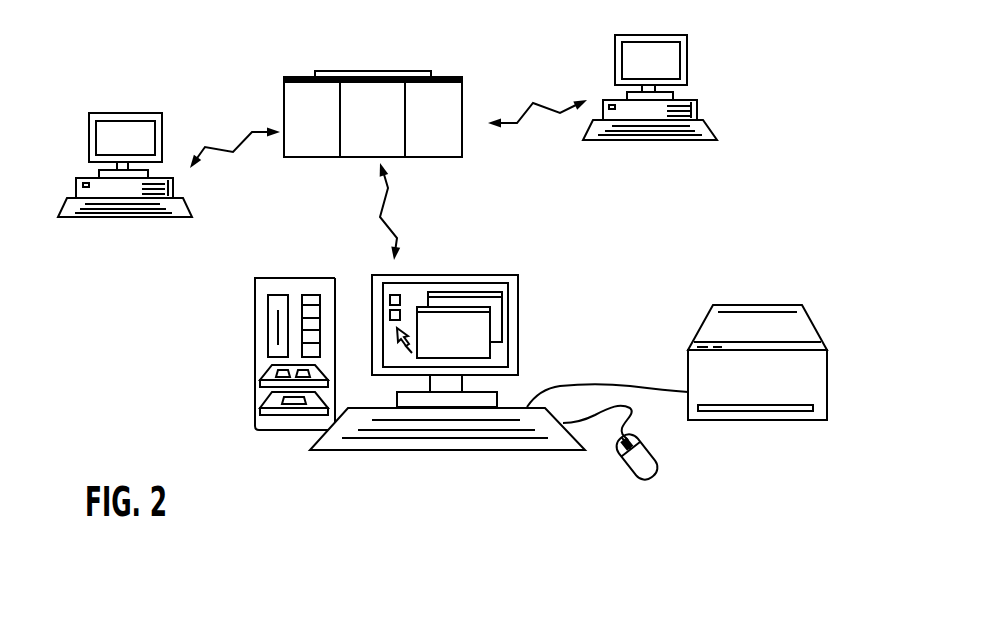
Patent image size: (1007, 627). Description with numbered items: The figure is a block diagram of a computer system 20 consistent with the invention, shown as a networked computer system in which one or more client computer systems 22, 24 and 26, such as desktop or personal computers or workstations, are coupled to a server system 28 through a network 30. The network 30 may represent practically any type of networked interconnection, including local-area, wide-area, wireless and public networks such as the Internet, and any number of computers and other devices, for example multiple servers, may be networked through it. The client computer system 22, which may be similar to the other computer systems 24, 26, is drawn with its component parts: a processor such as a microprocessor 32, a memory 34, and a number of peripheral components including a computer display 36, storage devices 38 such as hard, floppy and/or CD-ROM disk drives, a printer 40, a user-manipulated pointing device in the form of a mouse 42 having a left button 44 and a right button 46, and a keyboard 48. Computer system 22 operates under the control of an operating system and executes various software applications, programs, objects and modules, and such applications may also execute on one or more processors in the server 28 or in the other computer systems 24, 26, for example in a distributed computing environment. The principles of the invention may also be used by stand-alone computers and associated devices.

The computer system 20 is at (146, 299).
The client computer system 22 is at (296, 270).
The client computer system 24 is at (89, 150).
The client computer system 26 is at (615, 50).
The server system 28 is at (282, 105).
The network 30 is at (533, 104).
The microprocessor 32 is at (262, 411).
The memory 34 is at (262, 381).
The computer display 36 is at (512, 329).
The storage devices 38 is at (268, 336).
The printer 40 is at (688, 366).
The mouse 42 is at (659, 482).
The left button 44 is at (620, 455).
The right button 46 is at (641, 443).
The keyboard 48 is at (438, 450).